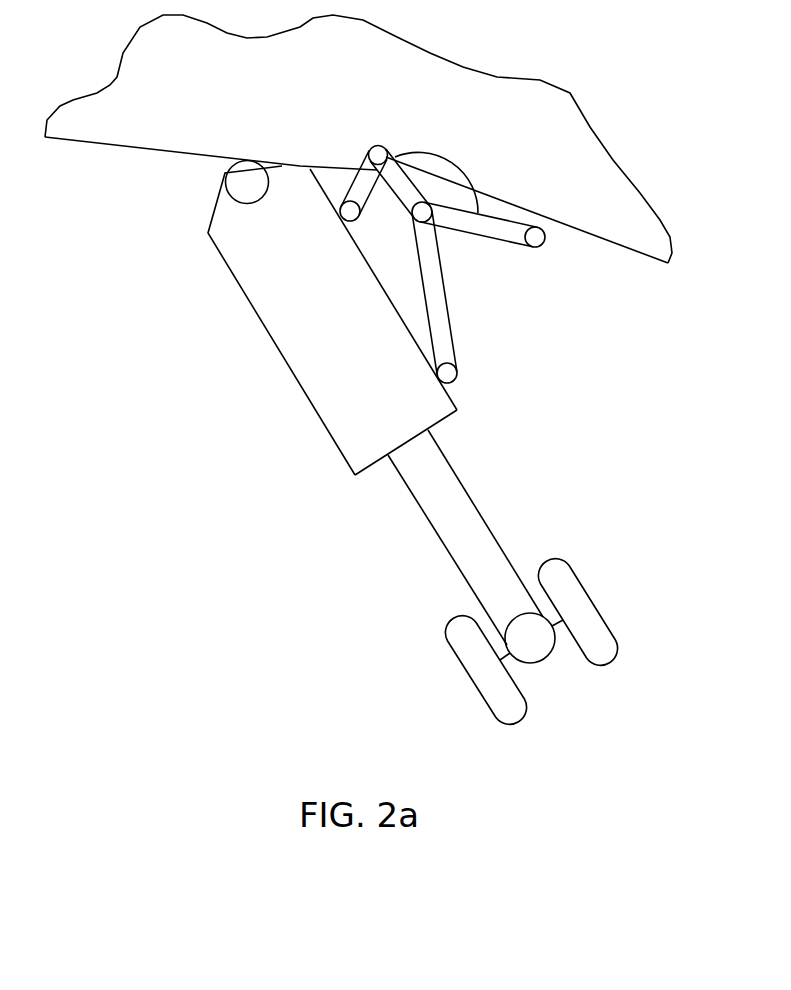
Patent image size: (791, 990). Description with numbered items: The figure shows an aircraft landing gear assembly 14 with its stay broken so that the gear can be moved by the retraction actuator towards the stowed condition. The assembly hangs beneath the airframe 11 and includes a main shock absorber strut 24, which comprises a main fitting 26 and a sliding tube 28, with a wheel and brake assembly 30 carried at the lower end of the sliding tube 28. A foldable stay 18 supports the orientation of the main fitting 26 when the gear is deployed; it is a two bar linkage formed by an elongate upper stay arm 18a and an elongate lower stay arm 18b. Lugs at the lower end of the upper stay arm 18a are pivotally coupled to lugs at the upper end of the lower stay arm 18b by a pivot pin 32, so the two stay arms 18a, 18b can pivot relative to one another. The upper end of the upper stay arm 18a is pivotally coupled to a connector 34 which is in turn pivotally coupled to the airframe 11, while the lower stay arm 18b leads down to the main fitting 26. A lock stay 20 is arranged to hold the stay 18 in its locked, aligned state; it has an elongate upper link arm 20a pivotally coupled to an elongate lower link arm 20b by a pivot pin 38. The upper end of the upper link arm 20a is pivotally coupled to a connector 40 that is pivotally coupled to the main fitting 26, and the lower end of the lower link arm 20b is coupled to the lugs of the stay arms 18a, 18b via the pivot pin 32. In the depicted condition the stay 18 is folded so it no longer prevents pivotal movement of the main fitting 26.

The airframe 11 is at (205, 101).
The aircraft landing gear assembly 14 is at (371, 408).
The foldable stay 18 is at (486, 270).
The upper stay arm 18a is at (509, 230).
The lower stay arm 18b is at (453, 323).
The lock stay 20 is at (288, 212).
The upper link arm 20a is at (360, 164).
The lower link arm 20b is at (407, 191).
The main shock absorber strut 24 is at (294, 386).
The main fitting 26 is at (347, 428).
The sliding tube 28 is at (425, 514).
The wheel and brake assembly 30 is at (444, 663).
The pivot pin 32 is at (426, 223).
The connector 34 is at (545, 244).
The pivot pin 38 is at (375, 148).
The connector 40 is at (340, 211).